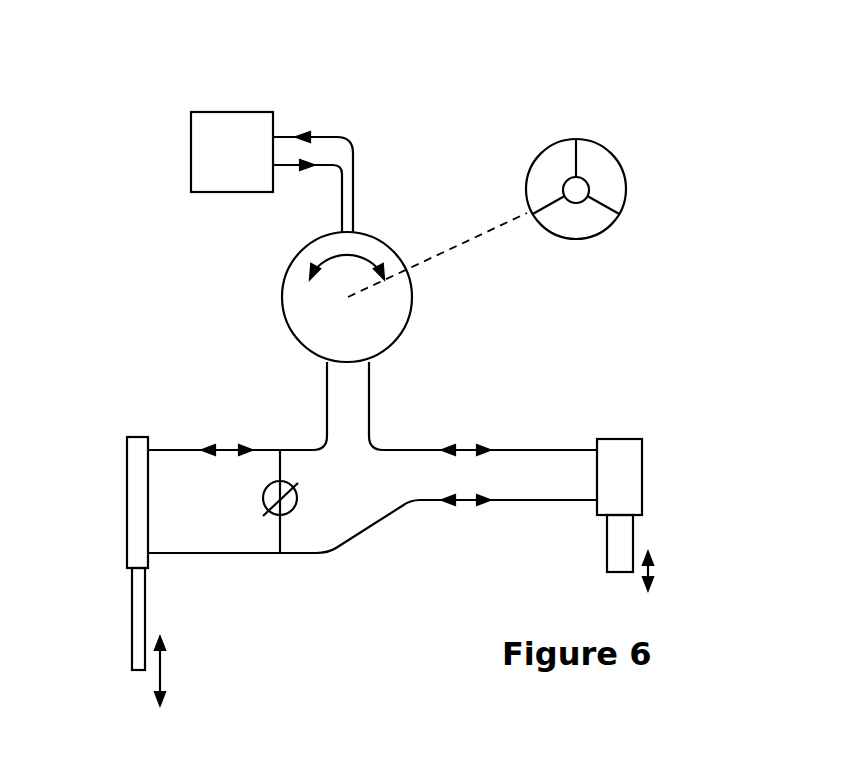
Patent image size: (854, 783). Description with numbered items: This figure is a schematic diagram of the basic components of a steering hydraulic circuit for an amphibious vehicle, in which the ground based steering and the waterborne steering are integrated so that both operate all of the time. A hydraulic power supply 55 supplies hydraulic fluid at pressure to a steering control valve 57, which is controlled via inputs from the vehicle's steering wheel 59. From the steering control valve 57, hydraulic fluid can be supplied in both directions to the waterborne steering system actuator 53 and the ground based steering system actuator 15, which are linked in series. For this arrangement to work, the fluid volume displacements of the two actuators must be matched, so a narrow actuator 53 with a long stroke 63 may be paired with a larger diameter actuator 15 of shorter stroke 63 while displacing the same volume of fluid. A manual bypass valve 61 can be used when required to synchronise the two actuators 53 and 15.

The ground based steering system actuator 15 is at (628, 439).
The waterborne steering system actuator 53 is at (140, 437).
The hydraulic power supply 55 is at (248, 112).
The steering control valve 57 is at (376, 240).
The steering wheel 59 is at (600, 148).
The manual bypass valve 61 is at (298, 500).
The stroke 63 is at (652, 572).